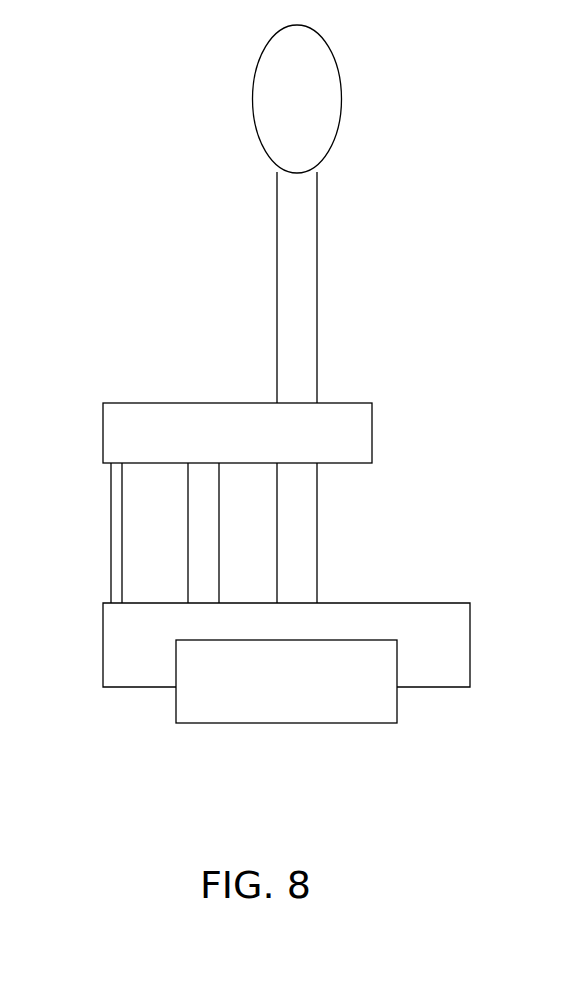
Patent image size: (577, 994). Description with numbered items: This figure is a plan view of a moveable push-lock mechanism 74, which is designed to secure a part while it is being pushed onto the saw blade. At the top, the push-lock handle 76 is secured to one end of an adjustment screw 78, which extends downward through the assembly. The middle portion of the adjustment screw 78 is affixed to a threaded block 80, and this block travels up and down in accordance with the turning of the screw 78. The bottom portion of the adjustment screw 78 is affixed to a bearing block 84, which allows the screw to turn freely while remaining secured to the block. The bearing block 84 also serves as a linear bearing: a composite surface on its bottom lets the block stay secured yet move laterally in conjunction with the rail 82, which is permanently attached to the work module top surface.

The push-lock mechanism 74 is at (472, 248).
The push-lock handle 76 is at (336, 78).
The adjustment screw 78 is at (317, 259).
The threaded block 80 is at (123, 405).
The rail 82 is at (323, 717).
The bearing block 84 is at (470, 655).